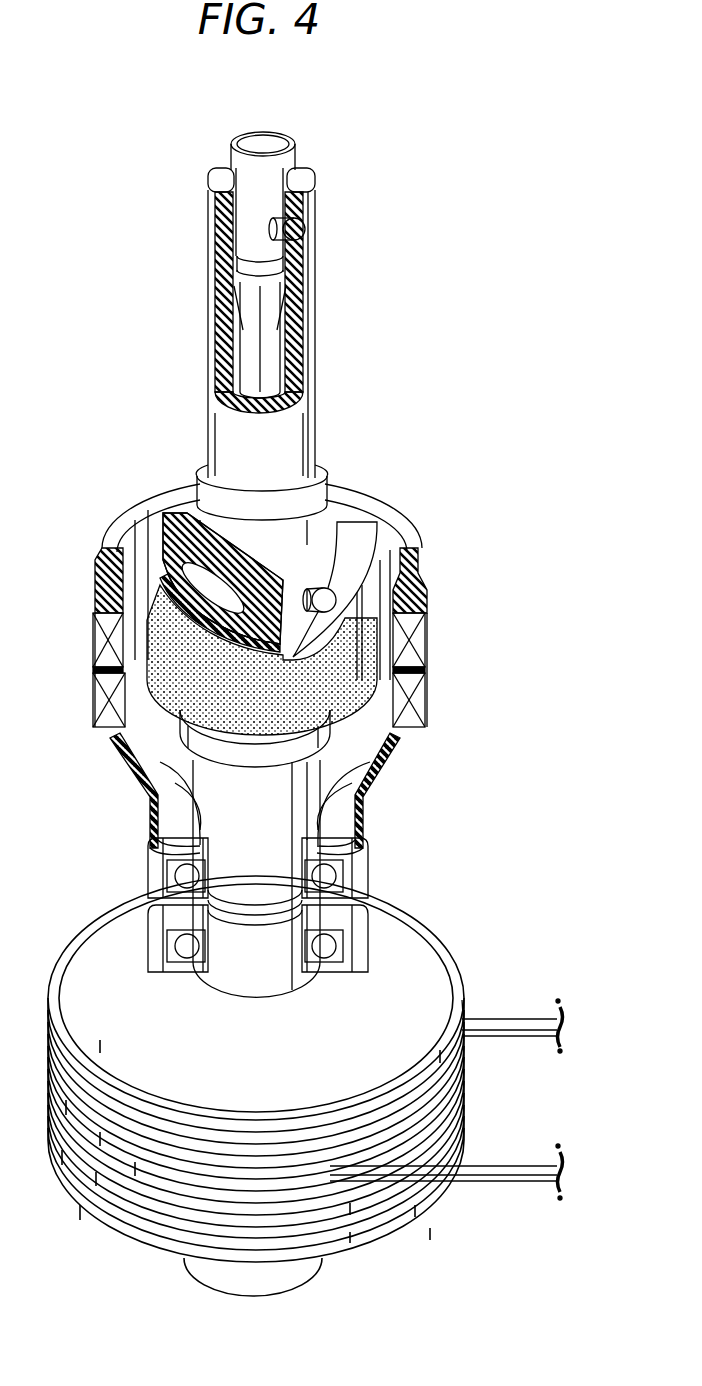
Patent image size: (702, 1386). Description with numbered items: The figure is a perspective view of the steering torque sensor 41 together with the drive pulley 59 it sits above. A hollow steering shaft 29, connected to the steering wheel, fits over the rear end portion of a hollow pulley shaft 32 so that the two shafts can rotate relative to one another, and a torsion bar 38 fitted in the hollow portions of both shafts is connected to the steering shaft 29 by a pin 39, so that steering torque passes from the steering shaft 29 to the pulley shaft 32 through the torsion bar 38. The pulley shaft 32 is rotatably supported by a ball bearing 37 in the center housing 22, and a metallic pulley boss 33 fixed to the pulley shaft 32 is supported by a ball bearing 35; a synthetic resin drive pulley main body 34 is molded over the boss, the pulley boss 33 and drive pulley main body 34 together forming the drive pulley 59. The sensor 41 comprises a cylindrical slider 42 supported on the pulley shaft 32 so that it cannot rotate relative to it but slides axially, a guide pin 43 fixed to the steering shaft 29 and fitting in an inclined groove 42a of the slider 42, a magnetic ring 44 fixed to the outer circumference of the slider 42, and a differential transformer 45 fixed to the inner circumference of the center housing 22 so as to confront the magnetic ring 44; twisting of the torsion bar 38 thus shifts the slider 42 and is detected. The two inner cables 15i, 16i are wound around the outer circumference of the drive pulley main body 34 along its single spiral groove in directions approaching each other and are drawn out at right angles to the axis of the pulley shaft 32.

The inner cable 15i is at (512, 1027).
The inner cable 16i is at (510, 1170).
The center housing 22 is at (430, 566).
The steering shaft 29 is at (317, 378).
The pulley shaft 32 is at (307, 806).
The pulley boss 33 is at (232, 987).
The drive pulley main body 34 is at (470, 1005).
The ball bearing 35 is at (323, 960).
The ball bearing 37 is at (322, 880).
The torsion bar 38 is at (275, 363).
The pin 39 is at (305, 231).
The steering torque sensor 41 is at (456, 614).
The cylindrical slider 42 is at (143, 600).
The inclined groove 42a is at (278, 640).
The guide pin 43 is at (306, 595).
The magnetic ring 44 is at (262, 735).
The differential transformer 45 is at (430, 693).
The drive pulley 59 is at (98, 903).